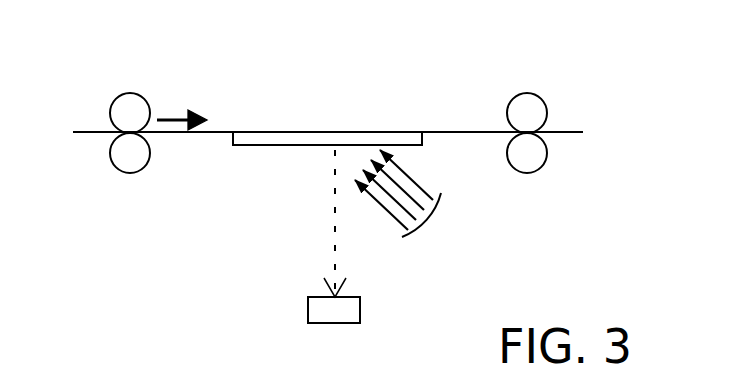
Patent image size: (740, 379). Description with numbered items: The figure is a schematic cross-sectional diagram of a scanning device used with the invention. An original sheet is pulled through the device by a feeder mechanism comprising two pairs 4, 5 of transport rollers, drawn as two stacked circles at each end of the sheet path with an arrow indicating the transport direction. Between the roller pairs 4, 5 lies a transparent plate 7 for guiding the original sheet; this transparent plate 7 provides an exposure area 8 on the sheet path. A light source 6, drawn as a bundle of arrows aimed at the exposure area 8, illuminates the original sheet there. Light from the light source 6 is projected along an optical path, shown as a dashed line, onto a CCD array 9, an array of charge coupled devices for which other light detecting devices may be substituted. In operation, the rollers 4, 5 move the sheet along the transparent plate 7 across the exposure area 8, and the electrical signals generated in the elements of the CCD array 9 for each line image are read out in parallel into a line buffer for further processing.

The pair of transport rollers 4 is at (129, 87).
The pair of transport rollers 5 is at (527, 87).
The light source 6 is at (449, 191).
The transparent plate 7 is at (226, 139).
The exposure area 8 is at (335, 121).
The CCD array 9 is at (339, 327).